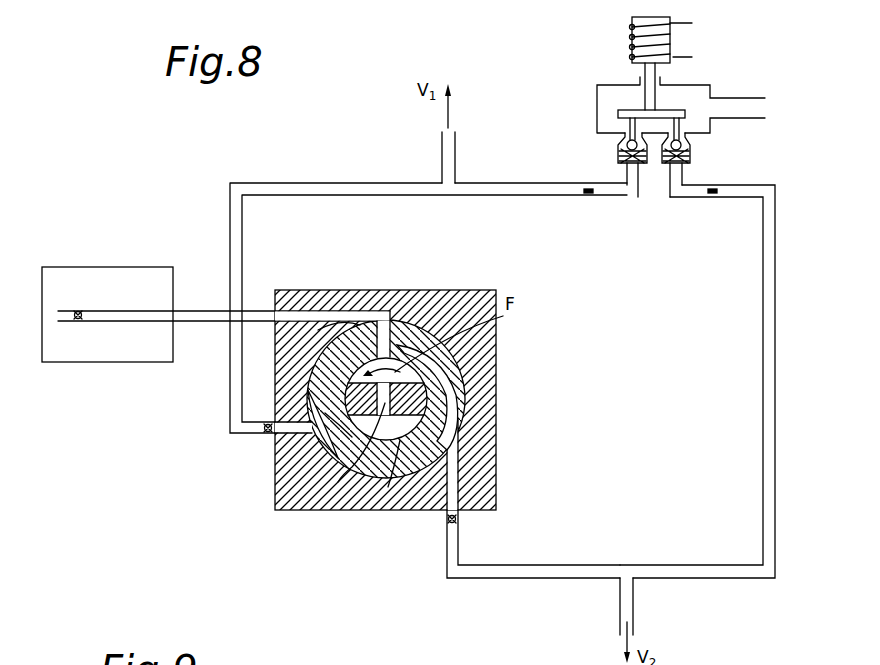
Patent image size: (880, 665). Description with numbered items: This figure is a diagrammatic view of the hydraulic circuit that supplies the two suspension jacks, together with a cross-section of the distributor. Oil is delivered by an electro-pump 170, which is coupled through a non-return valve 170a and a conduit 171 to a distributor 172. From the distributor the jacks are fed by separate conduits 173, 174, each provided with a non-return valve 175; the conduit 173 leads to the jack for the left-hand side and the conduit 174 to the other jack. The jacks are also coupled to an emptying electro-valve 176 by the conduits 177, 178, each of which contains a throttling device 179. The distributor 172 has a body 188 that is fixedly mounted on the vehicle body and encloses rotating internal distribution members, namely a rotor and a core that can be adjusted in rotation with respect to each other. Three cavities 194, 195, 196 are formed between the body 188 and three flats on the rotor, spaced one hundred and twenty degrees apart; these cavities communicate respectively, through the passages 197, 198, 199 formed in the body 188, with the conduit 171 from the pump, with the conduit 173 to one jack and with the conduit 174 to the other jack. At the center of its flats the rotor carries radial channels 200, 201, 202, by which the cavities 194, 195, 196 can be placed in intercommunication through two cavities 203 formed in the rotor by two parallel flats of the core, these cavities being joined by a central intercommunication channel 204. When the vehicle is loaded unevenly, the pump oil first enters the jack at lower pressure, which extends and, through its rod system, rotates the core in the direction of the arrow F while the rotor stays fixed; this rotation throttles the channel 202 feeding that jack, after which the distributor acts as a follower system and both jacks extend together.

The electro-pump 170 is at (71, 258).
The non-return valve 170a is at (84, 308).
The conduit 171 is at (196, 309).
The distributor 172 is at (505, 334).
The conduit 173 is at (547, 578).
The conduit 174 is at (296, 184).
The non-return valve 175 is at (260, 431).
The emptying electro-valve 176 is at (593, 101).
The conduit 177 is at (692, 577).
The conduit 178 is at (519, 195).
The throttling device 179 is at (590, 196).
The body 188 is at (480, 427).
The cavity 194 is at (413, 330).
The cavity 195 is at (462, 403).
The cavity 196 is at (300, 448).
The passage 197 is at (310, 313).
The passage 198 is at (458, 492).
The passage 199 is at (293, 395).
The radial channel 200 is at (388, 338).
The radial channel 201 is at (468, 445).
The radial channel 202 is at (312, 483).
The cavity 203 is at (430, 372).
The central intercommunication channel 204 is at (380, 488).